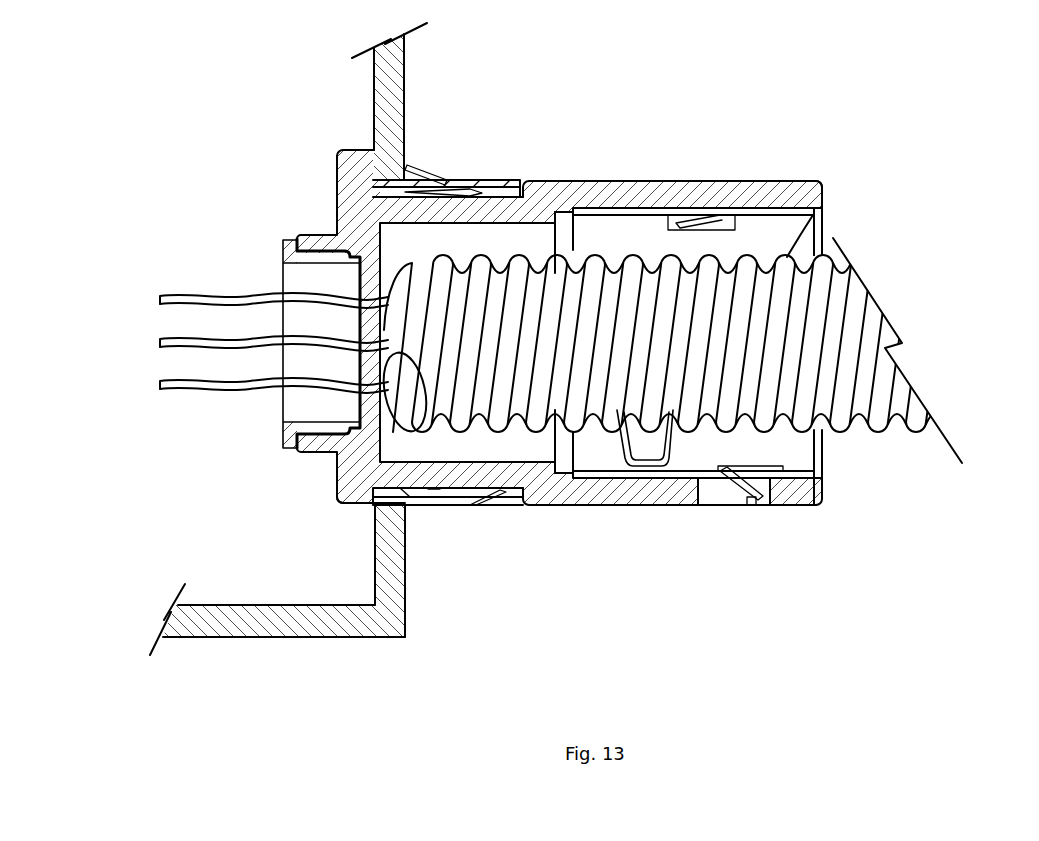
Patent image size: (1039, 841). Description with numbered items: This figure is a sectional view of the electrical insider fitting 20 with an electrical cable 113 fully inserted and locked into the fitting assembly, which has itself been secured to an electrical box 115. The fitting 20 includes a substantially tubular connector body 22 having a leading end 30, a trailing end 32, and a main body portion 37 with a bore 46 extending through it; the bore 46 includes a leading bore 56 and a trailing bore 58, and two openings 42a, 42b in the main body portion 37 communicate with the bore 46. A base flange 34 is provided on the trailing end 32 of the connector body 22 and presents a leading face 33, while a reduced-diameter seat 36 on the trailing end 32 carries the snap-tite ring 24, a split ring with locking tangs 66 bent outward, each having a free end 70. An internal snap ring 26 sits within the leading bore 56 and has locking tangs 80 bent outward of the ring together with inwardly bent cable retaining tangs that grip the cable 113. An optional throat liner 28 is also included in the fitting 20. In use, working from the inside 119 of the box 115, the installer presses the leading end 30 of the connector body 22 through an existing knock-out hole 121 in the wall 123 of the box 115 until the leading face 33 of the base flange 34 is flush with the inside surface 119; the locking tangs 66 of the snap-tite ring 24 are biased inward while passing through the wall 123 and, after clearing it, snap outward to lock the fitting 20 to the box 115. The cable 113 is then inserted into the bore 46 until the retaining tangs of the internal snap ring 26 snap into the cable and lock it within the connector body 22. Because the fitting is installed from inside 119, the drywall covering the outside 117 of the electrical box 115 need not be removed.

The electrical insider fitting 20 is at (682, 104).
The connector body 22 is at (610, 505).
The snap-tite ring 24 is at (505, 181).
The internal snap ring 26 is at (772, 500).
The throat liner 28 is at (292, 250).
The leading end 30 is at (822, 232).
The trailing end 32 is at (335, 463).
The leading face 33 is at (372, 158).
The base flange 34 is at (353, 510).
The reduced-diameter seat 36 is at (493, 503).
The main body portion 37 is at (688, 182).
The opening 42a is at (715, 490).
The opening 42b is at (727, 220).
The bore 46 is at (797, 452).
The leading bore 56 is at (563, 215).
The trailing bore 58 is at (449, 251).
The locking tangs 66 is at (433, 178).
The free end 70 is at (450, 189).
The locking tangs 80 is at (750, 504).
The electrical cable 113 is at (912, 438).
The electrical box 115 is at (390, 637).
The outside 117 is at (405, 88).
The inside surface 119 is at (372, 90).
The knock-out hole 121 is at (405, 506).
The wall 123 is at (210, 620).